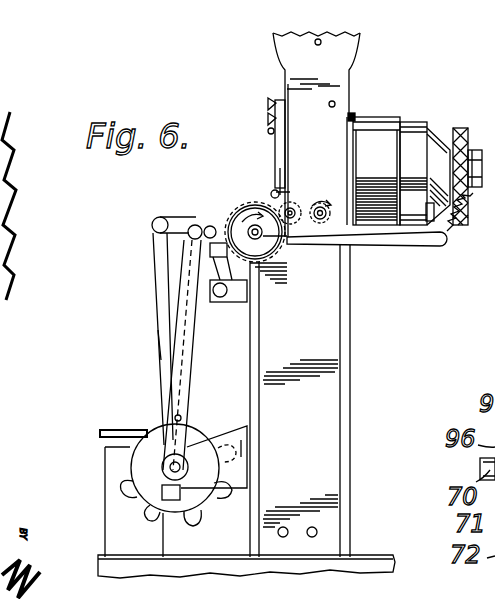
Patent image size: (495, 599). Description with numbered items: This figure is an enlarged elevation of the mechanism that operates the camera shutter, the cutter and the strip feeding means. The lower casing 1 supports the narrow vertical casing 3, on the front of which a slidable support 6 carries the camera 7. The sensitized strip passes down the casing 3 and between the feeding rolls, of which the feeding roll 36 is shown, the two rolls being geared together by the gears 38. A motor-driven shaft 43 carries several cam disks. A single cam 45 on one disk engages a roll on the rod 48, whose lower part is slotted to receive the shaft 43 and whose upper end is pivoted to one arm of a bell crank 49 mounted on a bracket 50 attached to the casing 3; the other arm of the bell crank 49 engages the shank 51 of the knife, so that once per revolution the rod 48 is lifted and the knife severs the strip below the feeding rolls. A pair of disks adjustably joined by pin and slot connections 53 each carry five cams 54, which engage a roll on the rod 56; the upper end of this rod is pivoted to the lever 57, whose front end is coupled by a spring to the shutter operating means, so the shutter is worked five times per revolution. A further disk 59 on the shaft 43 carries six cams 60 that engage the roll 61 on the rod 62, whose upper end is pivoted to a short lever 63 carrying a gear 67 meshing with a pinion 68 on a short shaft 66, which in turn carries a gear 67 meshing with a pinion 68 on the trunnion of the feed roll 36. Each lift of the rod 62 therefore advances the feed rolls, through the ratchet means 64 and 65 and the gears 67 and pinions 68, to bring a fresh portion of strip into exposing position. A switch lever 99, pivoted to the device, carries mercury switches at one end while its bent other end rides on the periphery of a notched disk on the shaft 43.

The casing 1 is at (358, 568).
The narrow vertical casing 3 is at (333, 70).
The slidable support 6 is at (380, 124).
The camera 7 is at (415, 136).
The feeding roll 36 is at (374, 169).
The gears 38 is at (321, 200).
The shaft 43 is at (173, 467).
The cam 45 is at (142, 436).
The rod 48 is at (170, 298).
The bell crank 49 is at (243, 297).
The bracket 50 is at (228, 328).
The shank 51 is at (190, 246).
The pin and slot connections 53 is at (471, 222).
The cams 54 is at (247, 428).
The rod 56 is at (163, 347).
The lever 57 is at (170, 216).
The disk 59 is at (150, 473).
The cams 60 is at (142, 515).
The roll 61 is at (183, 420).
The rod 62 is at (183, 265).
The short lever 63 is at (193, 225).
The ratchet means 64 is at (211, 226).
The ratchet means 65 is at (238, 203).
The short shaft 66 is at (268, 243).
The gear 67 is at (261, 238).
The pinion 68 is at (298, 197).
The switch lever 99 is at (112, 430).